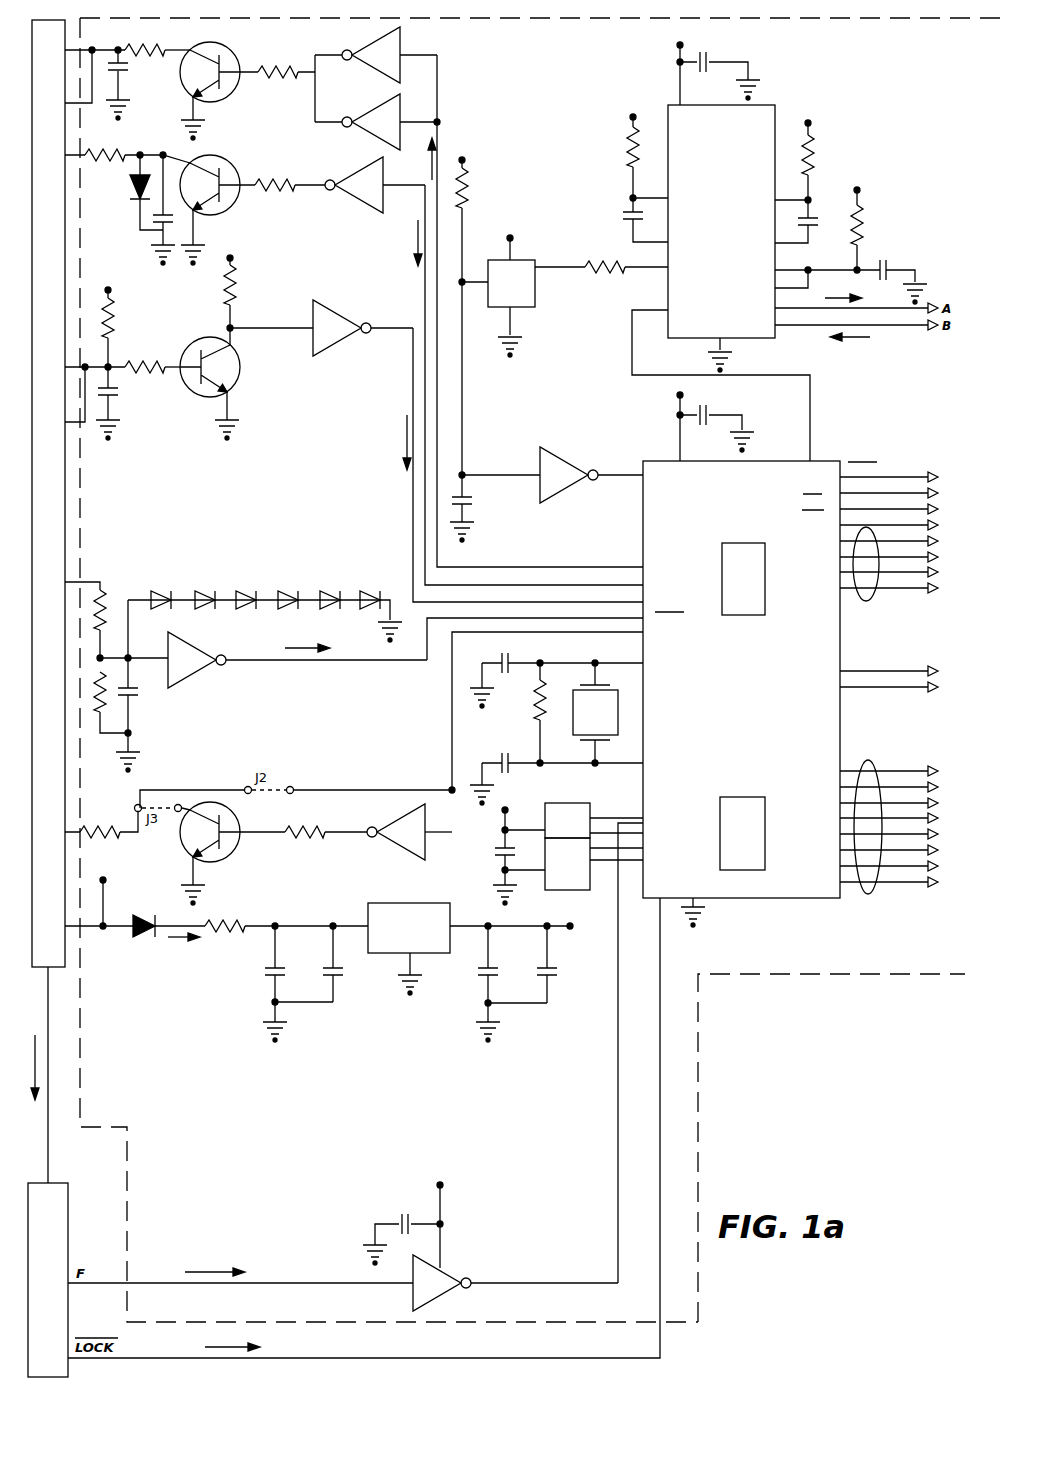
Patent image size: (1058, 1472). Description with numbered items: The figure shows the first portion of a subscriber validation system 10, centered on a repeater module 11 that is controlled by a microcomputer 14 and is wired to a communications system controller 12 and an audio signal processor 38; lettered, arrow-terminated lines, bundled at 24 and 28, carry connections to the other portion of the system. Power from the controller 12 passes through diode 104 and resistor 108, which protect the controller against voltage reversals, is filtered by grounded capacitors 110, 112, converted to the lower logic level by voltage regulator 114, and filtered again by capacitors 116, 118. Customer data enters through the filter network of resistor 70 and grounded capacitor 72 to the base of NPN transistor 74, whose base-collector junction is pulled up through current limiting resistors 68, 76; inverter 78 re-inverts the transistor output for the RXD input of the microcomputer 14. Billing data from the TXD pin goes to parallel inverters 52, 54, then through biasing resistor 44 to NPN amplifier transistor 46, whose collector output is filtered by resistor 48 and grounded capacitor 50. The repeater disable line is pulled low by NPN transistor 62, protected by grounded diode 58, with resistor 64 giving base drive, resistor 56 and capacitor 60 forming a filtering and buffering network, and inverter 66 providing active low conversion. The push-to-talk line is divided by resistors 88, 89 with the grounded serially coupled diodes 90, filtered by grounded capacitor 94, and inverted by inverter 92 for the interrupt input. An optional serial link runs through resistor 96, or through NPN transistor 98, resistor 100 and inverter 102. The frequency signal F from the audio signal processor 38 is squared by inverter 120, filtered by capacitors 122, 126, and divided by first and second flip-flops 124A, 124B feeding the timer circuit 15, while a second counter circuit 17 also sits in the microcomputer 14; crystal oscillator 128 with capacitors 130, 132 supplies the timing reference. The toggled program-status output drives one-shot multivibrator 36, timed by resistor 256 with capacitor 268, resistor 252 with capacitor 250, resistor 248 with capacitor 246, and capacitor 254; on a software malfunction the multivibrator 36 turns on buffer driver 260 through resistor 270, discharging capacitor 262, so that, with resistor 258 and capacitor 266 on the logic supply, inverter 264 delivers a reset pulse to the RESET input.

The subscriber validation system 10 is at (784, 993).
The repeater module 11 is at (894, 980).
The communications system controller 12 is at (57, 881).
The microcomputer 14 is at (754, 732).
The timer circuit 15 is at (754, 846).
The second timer, or counter, circuit 17 is at (756, 592).
The bus 24 is at (866, 601).
The bus 28 is at (868, 760).
The one-shot multivibrator 36 is at (731, 316).
The audio signal processor 38 is at (58, 1272).
The biasing resistor 44 is at (293, 56).
The NPN amplifier transistor 46 is at (236, 33).
The resistor 48 is at (156, 33).
The capacitor 50 is at (130, 70).
The inverter 52 is at (400, 54).
The inverter 54 is at (382, 103).
The resistor 56 is at (110, 150).
The grounded diode 58 is at (130, 190).
The capacitor 60 is at (176, 217).
The NPN transistor 62 is at (232, 155).
The resistor 64 is at (283, 196).
The inverter 66 is at (358, 162).
The current limiting resistor 68 is at (116, 312).
The resistor 70 is at (152, 355).
The grounded capacitor 72 is at (122, 392).
The NPN transistor 74 is at (243, 372).
The current limiting resistor 76 is at (226, 285).
The inverter 78 is at (343, 305).
The resistor 88 is at (112, 605).
The resistor 89 is at (97, 715).
The grounded serially coupled diodes 90 is at (390, 591).
The inverter 92 is at (208, 646).
The grounded capacitor 94 is at (146, 692).
The resistor 96 is at (118, 806).
The NPN transistor 98 is at (185, 838).
The resistor 100 is at (308, 820).
The inverter 102 is at (385, 808).
The diode 104 is at (145, 940).
The resistor 108 is at (246, 918).
The capacitor 110 is at (260, 975).
The capacitor 112 is at (346, 976).
The voltage regulator 114 is at (428, 941).
The capacitor 116 is at (470, 978).
The capacitor 118 is at (568, 970).
The inverter 120 is at (442, 1294).
The capacitor 122 is at (406, 1212).
The first divide-by-two circuit 124A is at (586, 829).
The second divide-by-two circuit 124B is at (586, 866).
The capacitor 126 is at (482, 840).
The crystal oscillator 128 is at (612, 724).
The capacitor 130 is at (482, 652).
The capacitor 132 is at (506, 750).
The capacitor 246 is at (884, 260).
The resistor 248 is at (862, 210).
The capacitor 250 is at (826, 228).
The resistor 252 is at (814, 144).
The capacitor 254 is at (718, 50).
The resistor 256 is at (622, 158).
The resistor 258 is at (472, 198).
The buffer driver 260 is at (535, 293).
The capacitor 262 is at (478, 506).
The inverter 264 is at (562, 458).
The capacitor 266 is at (708, 408).
The capacitor 268 is at (626, 222).
The resistor 270 is at (590, 258).